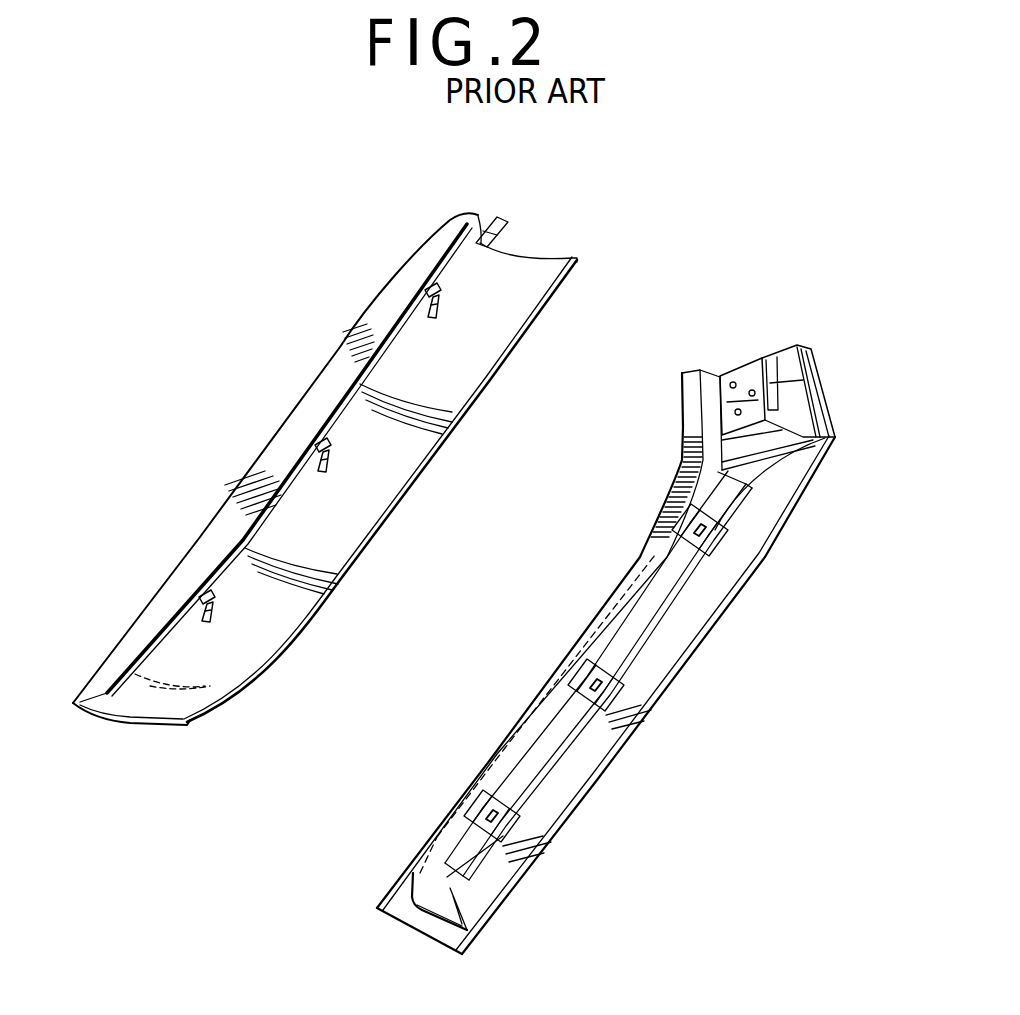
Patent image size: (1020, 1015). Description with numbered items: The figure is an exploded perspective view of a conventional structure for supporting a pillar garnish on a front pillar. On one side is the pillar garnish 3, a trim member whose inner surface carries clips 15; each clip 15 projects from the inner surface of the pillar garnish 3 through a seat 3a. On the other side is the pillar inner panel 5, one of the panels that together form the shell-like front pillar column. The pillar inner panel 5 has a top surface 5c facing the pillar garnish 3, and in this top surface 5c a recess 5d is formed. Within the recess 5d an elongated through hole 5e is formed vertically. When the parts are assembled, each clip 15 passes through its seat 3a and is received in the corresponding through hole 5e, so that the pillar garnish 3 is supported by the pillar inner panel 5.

The pillar garnish 3 is at (243, 467).
The seat 3a is at (443, 285).
The clip 15 is at (436, 316).
The pillar inner panel 5 is at (687, 628).
The top surface 5c is at (670, 580).
The recess 5d is at (710, 547).
The through hole 5e is at (713, 533).